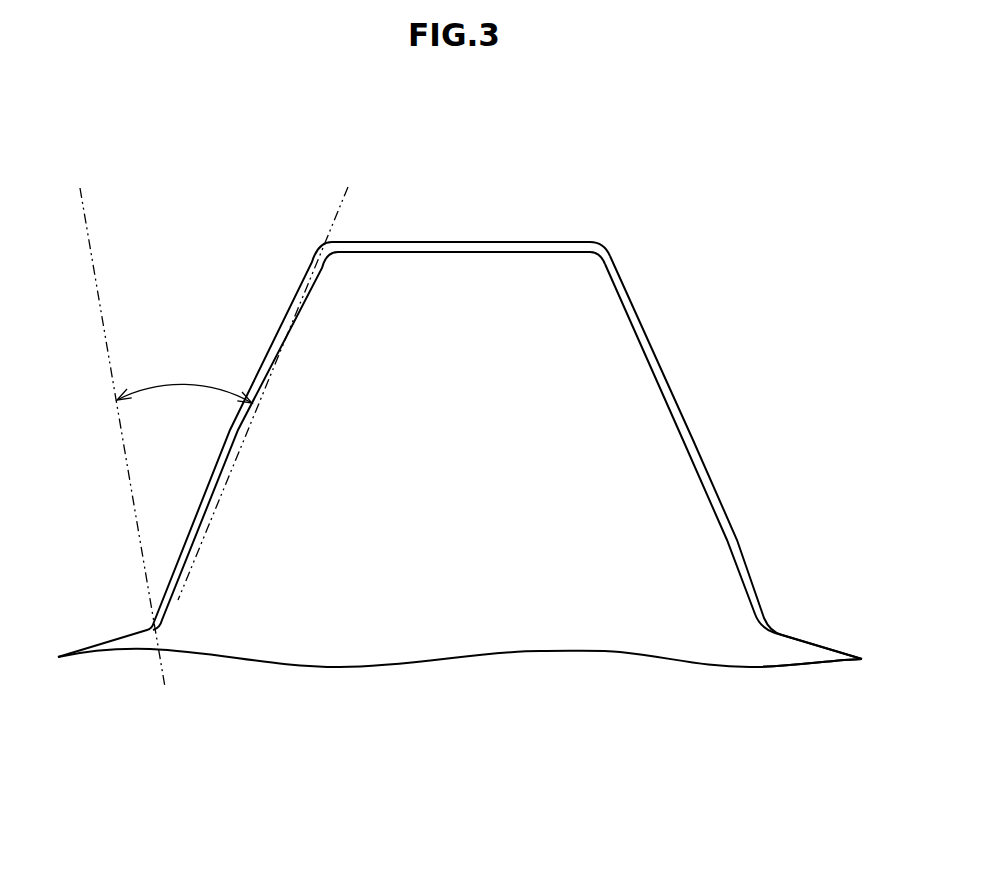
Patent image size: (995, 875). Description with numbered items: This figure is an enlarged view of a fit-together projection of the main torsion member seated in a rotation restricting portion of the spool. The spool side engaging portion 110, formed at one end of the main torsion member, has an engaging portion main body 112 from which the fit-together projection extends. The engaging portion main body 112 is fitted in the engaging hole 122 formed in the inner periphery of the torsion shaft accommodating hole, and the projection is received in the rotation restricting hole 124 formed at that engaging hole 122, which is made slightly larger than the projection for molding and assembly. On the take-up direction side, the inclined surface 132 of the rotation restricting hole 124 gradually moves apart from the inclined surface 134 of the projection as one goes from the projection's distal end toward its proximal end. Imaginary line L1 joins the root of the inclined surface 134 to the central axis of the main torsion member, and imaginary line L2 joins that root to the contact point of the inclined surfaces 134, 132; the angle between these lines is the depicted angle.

The spool side engaging portion 110 is at (492, 617).
The engaging portion main body 112 is at (818, 644).
The engaging hole 122 is at (802, 643).
The rotation restricting hole 124 is at (476, 247).
The inclined surface 132 is at (204, 507).
The inclined surface 134 is at (219, 457).
The imaginary line L1 is at (128, 487).
The imaginary line L2 is at (246, 432).